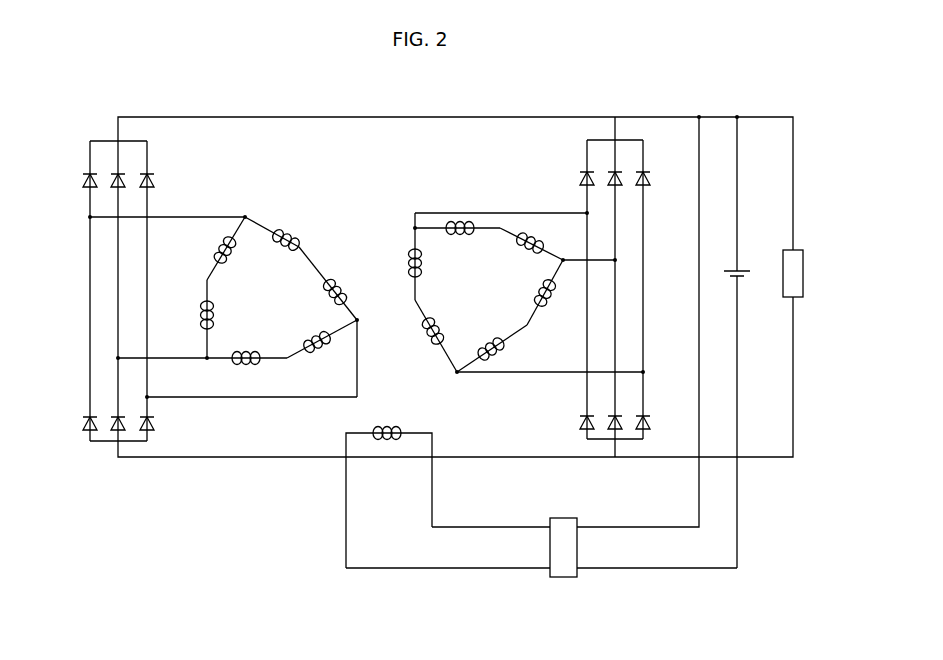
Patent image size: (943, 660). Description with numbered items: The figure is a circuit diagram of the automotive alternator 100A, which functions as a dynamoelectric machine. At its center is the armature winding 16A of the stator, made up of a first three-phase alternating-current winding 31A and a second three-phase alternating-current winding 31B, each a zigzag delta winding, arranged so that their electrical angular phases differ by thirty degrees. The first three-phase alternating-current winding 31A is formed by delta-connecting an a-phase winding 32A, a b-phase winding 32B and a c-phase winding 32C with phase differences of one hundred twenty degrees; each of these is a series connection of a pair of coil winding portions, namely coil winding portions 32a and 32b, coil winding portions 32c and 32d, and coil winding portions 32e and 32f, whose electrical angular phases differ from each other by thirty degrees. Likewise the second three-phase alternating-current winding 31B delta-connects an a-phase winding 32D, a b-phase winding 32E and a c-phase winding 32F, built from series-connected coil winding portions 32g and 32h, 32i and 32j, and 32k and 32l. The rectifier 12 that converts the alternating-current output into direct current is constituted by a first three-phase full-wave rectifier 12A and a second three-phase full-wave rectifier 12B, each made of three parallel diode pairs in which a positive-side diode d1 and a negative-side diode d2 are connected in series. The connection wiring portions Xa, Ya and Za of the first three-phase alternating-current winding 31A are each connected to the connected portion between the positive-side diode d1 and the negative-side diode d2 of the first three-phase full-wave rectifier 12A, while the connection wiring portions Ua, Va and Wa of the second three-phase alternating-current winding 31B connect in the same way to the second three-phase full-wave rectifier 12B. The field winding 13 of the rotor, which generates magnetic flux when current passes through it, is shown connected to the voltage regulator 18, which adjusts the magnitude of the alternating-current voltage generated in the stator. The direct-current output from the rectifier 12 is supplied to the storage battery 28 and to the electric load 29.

The automotive alternator 100A is at (91, 93).
The rectifier 12 is at (645, 172).
The first three-phase full-wave rectifier 12A is at (653, 172).
The second three-phase full-wave rectifier 12B is at (151, 172).
The field winding 13 is at (388, 440).
The armature winding 16A is at (390, 160).
The voltage regulator 18 is at (570, 528).
The storage battery 28 is at (742, 280).
The electric load 29 is at (788, 250).
The first three-phase alternating-current winding 31A is at (410, 255).
The second three-phase alternating-current winding 31B is at (293, 232).
The coil winding portion 32a is at (406, 258).
The coil winding portion 32b is at (438, 322).
The coil winding portion 32c is at (503, 343).
The coil winding portion 32d is at (536, 290).
The coil winding portion 32e is at (455, 222).
The coil winding portion 32f is at (524, 236).
The coil winding portion 32g is at (222, 240).
The coil winding portion 32h is at (215, 316).
The coil winding portion 32i is at (247, 362).
The coil winding portion 32j is at (313, 350).
The coil winding portion 32k is at (290, 232).
The coil winding portion 32l is at (326, 290).
The a-phase winding 32A is at (427, 351).
The b-phase winding 32B is at (494, 362).
The c-phase winding 32C is at (472, 208).
The a-phase winding 32D is at (213, 262).
The b-phase winding 32E is at (255, 368).
The c-phase winding 32F is at (345, 281).
The positive-side diode d1 is at (153, 182).
The negative-side diode d2 is at (150, 432).
The connection wiring portion Ua is at (245, 215).
The connection wiring portion Va is at (360, 323).
The connection wiring portion Wa is at (207, 360).
The connection wiring portion Xa is at (415, 226).
The connection wiring portion Ya is at (565, 262).
The connection wiring portion Za is at (457, 375).